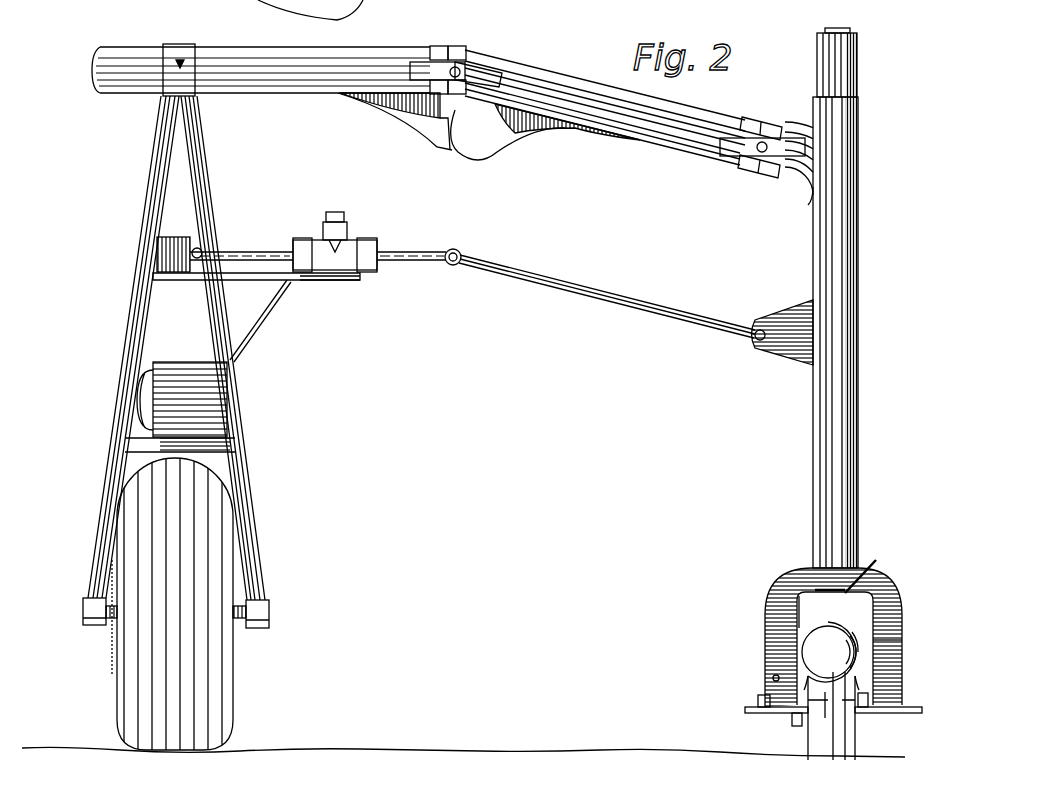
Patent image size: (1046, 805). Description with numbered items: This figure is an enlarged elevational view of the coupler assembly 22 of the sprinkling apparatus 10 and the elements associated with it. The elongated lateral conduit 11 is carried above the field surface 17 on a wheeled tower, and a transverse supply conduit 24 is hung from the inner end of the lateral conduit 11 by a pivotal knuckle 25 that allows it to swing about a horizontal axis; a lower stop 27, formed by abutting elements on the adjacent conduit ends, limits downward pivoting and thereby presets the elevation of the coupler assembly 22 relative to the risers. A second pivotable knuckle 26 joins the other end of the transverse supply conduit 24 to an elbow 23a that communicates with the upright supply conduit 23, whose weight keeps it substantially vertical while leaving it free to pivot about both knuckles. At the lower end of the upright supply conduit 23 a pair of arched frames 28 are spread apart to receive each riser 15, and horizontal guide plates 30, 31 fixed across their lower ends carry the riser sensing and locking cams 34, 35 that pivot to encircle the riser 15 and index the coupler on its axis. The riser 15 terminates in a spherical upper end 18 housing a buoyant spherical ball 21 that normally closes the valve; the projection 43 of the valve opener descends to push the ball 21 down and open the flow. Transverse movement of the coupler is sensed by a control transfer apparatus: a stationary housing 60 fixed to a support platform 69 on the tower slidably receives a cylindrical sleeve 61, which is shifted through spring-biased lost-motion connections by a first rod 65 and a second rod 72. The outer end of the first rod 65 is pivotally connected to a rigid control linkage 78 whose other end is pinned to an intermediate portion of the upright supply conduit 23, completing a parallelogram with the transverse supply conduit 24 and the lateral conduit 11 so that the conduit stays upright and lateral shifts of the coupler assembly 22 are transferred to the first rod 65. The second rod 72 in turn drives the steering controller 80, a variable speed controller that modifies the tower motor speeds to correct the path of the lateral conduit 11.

The sprinkling apparatus 10 is at (108, 38).
The lateral conduit 11 is at (132, 94).
The riser 15 is at (808, 742).
The field surface 17 is at (484, 748).
The spherical upper end 18 is at (862, 650).
The spherical ball 21 is at (826, 630).
The coupler assembly 22 is at (868, 466).
The upright supply conduit 23 is at (860, 348).
The elbow 23a is at (805, 168).
The transverse supply conduit 24 is at (650, 137).
The pivotal knuckle 25 is at (460, 48).
The second pivotable knuckle 26 is at (750, 168).
The lower stop 27 is at (456, 152).
The arched frame 28 is at (765, 633).
The horizontal guide plate 30 is at (748, 712).
The horizontal guide plate 31 is at (890, 713).
The riser sensing and locking cam 34 is at (812, 692).
The riser sensing and locking cam 35 is at (890, 682).
The projection 43 is at (852, 588).
The stationary housing 60 is at (336, 276).
The cylindrical sleeve 61 is at (372, 247).
The first rod 65 is at (450, 250).
The support platform 69 is at (199, 282).
The second rod 72 is at (276, 250).
The control linkage 78 is at (598, 270).
The steering controller 80 is at (157, 250).